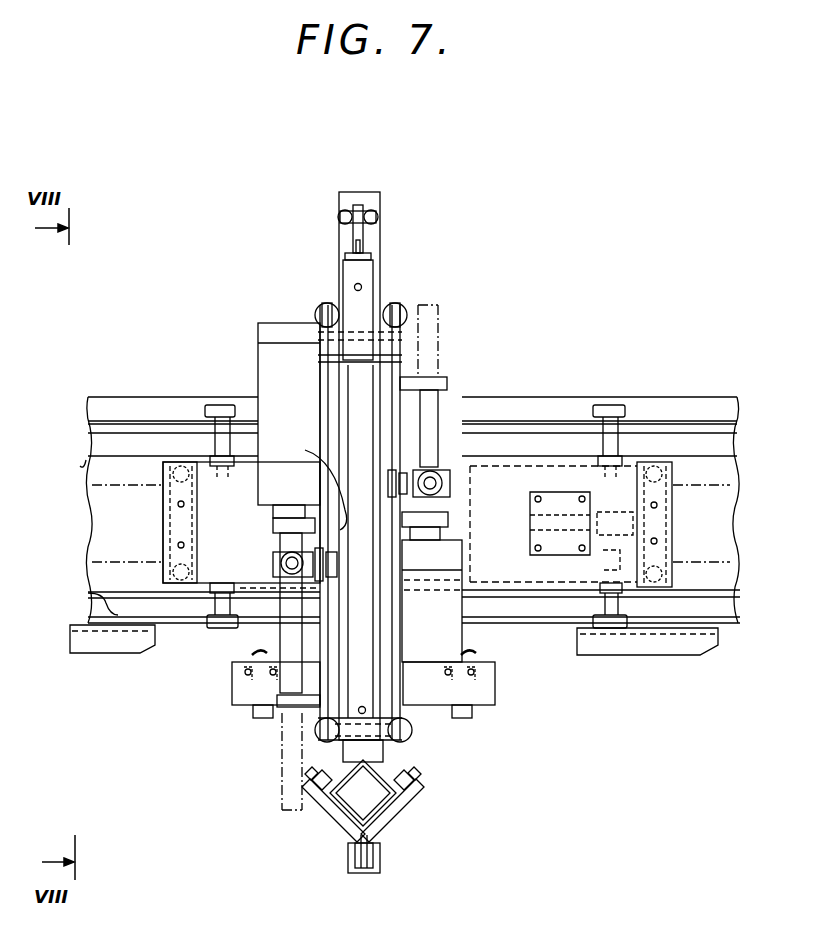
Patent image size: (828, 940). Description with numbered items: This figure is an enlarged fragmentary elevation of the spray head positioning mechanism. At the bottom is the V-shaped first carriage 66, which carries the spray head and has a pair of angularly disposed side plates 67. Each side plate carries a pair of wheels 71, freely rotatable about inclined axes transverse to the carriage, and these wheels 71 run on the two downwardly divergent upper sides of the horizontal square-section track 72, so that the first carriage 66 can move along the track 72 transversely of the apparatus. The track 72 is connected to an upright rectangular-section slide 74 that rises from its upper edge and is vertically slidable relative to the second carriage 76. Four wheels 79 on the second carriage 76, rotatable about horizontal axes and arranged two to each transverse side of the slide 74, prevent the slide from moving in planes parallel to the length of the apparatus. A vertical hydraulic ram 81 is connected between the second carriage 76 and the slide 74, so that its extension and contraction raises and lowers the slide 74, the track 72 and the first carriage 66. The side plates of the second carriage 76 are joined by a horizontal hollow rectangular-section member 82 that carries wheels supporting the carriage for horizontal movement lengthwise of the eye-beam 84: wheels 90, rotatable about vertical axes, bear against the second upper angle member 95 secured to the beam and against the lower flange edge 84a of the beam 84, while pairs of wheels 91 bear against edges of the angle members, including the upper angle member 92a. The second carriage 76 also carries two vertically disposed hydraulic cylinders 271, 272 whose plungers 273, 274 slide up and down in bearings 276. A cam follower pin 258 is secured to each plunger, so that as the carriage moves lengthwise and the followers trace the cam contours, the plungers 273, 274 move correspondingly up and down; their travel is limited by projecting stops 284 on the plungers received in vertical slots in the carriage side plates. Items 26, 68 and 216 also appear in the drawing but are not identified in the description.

The frame 26 is at (257, 690).
The first carriage 66 is at (395, 830).
The side plates 67 is at (330, 815).
The connector 68 is at (348, 855).
The wheels 71 is at (312, 776).
The track 72 is at (393, 775).
The slide 74 is at (372, 226).
The second carriage 76 is at (405, 360).
The wheels 79 is at (326, 302).
The hydraulic ram 81 is at (362, 300).
The hollow rectangular-section member 82 is at (525, 476).
The eye-beam 84 is at (690, 460).
The lower flange edge 84a is at (88, 596).
The wheels 90 is at (220, 405).
The wheels 91 is at (178, 462).
The upper angle member 92a is at (88, 462).
The second upper angle member 95 is at (147, 397).
The bracket 216 is at (447, 377).
The pin 258 is at (445, 485).
The hydraulic cylinder 271 is at (258, 343).
The hydraulic cylinder 272 is at (462, 632).
The plunger 273 is at (280, 625).
The plunger 274 is at (432, 410).
The bearings 276 is at (448, 520).
The projecting stops 284 is at (305, 450).